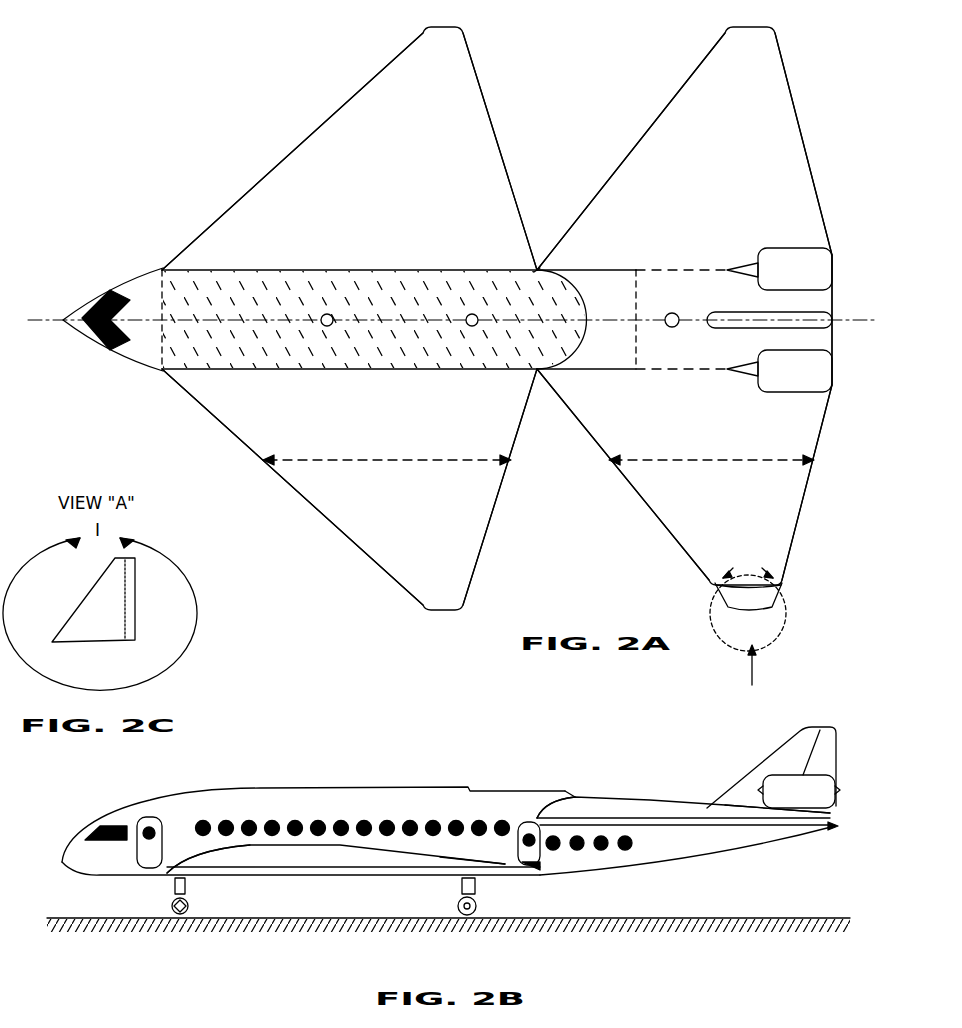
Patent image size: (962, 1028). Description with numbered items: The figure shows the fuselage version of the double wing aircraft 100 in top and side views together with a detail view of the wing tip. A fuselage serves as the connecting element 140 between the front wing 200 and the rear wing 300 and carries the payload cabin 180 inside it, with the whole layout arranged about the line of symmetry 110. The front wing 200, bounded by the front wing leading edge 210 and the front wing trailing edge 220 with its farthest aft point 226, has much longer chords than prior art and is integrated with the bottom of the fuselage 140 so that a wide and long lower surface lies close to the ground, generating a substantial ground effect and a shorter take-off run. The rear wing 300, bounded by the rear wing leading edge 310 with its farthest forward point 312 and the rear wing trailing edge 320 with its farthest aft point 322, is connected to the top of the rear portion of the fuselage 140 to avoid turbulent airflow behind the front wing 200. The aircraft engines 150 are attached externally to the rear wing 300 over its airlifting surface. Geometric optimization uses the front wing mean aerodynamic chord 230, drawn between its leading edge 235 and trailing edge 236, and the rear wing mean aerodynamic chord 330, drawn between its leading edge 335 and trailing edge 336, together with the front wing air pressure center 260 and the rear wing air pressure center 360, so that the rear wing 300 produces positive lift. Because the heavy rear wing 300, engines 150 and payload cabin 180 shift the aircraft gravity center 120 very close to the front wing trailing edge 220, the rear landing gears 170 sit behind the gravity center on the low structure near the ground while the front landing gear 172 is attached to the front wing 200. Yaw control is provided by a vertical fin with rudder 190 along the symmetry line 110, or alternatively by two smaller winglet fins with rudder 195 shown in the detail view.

In FIG. 2A, the double wing aircraft 100 is at (510, 352).
In FIG. 2A, the line of symmetry 110 is at (153, 325).
In FIG. 2A, the aircraft gravity center 120 is at (469, 316).
In FIG. 2A, the fuselage connecting element 140 is at (146, 289).
In FIG. 2B, the fuselage connecting element 140 is at (345, 804).
In FIG. 2A, the externally attached engines 150 is at (815, 268).
In FIG. 2B, the externally attached engines 150 is at (775, 788).
In FIG. 2B, the rear landing gears 170 is at (457, 907).
In FIG. 2B, the front landing gears 172 is at (171, 908).
In FIG. 2A, the payload cabin 180 is at (212, 350).
In FIG. 2A, the fin with rudder 190 is at (730, 312).
In FIG. 2B, the fin with rudder 190 is at (795, 752).
In FIG. 2A, the winglet fin with rudder 195 is at (745, 612).
In FIG. 2C, the winglet fin with rudder 195 is at (105, 618).
In FIG. 2A, the front wing 200 is at (226, 229).
In FIG. 2B, the front wing 200 is at (290, 855).
In FIG. 2A, the front wing leading edge 210 is at (273, 166).
In FIG. 2B, the front wing leading edge 210 is at (257, 870).
In FIG. 2A, the front wing trailing edge 220 is at (508, 56).
In FIG. 2B, the front wing trailing edge 220 is at (490, 870).
In FIG. 2B, the front wing trailing edge farthest aft point 226 is at (535, 868).
In FIG. 2A, the front wing mean aerodynamic chord 230 is at (380, 463).
In FIG. 2A, the front wing mean aerodynamic chord leading edge 235 is at (277, 478).
In FIG. 2A, the front wing mean aerodynamic chord trailing edge 236 is at (505, 467).
In FIG. 2A, the front wing air pressure center 260 is at (331, 316).
In FIG. 2A, the rear wing 300 is at (660, 152).
In FIG. 2B, the rear wing 300 is at (620, 806).
In FIG. 2A, the rear wing leading edge 310 is at (665, 530).
In FIG. 2B, the rear wing leading edge 310 is at (588, 820).
In FIG. 2A, the rear wing leading edge farthest forward point 312 is at (540, 268).
In FIG. 2B, the rear wing leading edge farthest forward point 312 is at (540, 815).
In FIG. 2A, the rear wing trailing edge 320 is at (808, 156).
In FIG. 2B, the rear wing trailing edge 320 is at (805, 845).
In FIG. 2A, the rear wing trailing edge farthest aft point 322 is at (836, 320).
In FIG. 2B, the rear wing trailing edge farthest aft point 322 is at (836, 830).
In FIG. 2A, the rear wing mean aerodynamic chord 330 is at (700, 456).
In FIG. 2A, the rear wing mean aerodynamic chord leading edge 335 is at (609, 462).
In FIG. 2A, the rear wing mean aerodynamic chord trailing edge 336 is at (812, 462).
In FIG. 2A, the rear wing air pressure center 360 is at (669, 313).